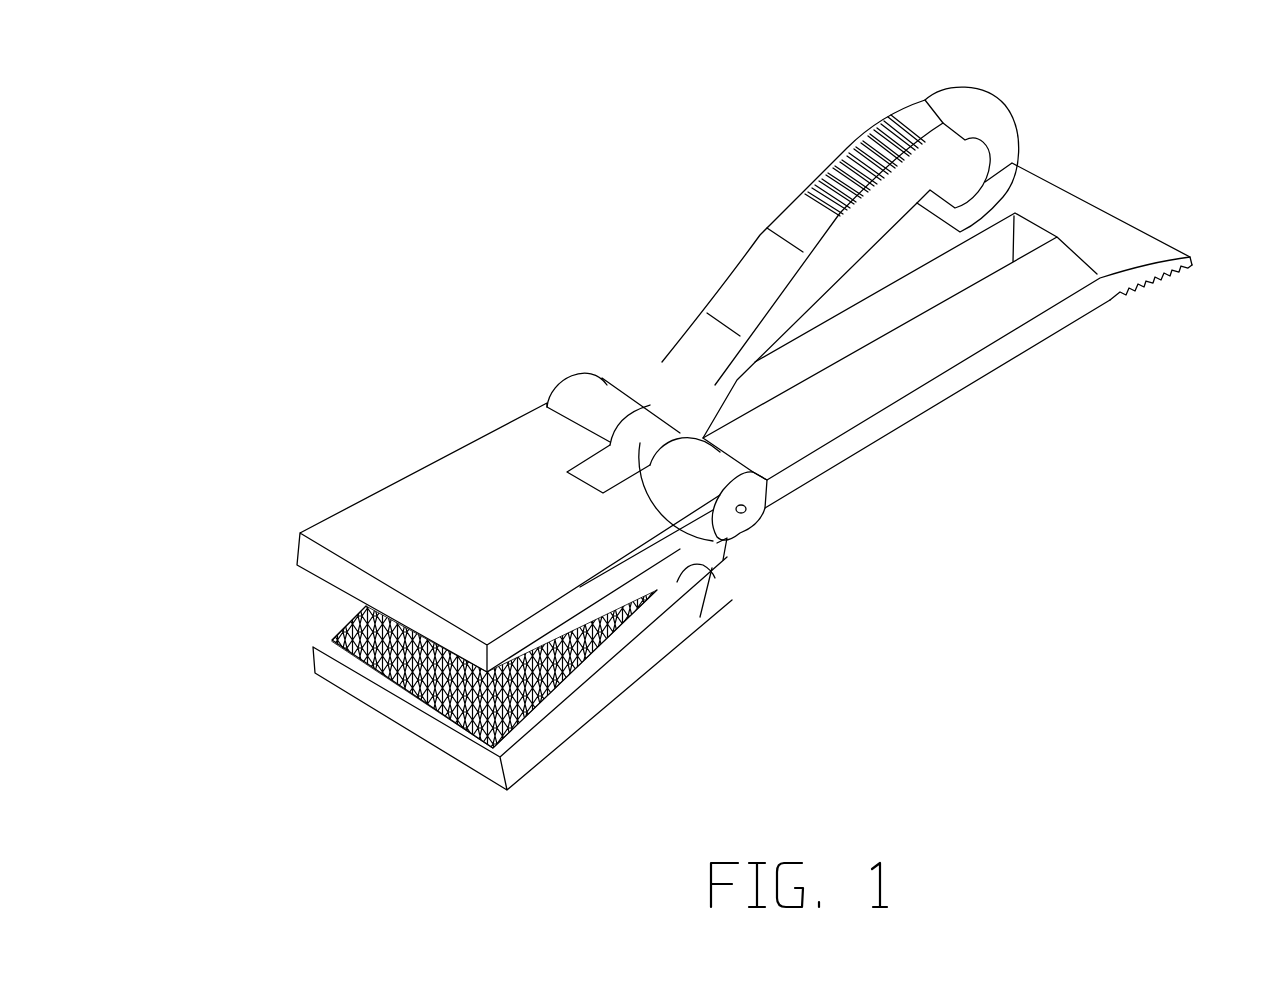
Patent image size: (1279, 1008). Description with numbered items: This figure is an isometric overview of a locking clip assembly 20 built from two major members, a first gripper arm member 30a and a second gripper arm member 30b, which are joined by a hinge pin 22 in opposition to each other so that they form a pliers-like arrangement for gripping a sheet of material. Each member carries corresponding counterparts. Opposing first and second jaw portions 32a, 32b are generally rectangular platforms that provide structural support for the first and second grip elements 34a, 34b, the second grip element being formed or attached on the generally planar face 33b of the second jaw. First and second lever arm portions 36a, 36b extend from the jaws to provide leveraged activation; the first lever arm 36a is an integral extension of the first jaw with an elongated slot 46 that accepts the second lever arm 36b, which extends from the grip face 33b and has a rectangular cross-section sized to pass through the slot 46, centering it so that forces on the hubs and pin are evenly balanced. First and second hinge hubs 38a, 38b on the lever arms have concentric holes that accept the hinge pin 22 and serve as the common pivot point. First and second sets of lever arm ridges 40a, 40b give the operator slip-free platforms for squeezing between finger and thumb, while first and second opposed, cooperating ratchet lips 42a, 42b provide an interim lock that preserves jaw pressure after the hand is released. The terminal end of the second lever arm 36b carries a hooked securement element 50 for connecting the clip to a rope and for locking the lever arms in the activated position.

The clip assembly 20 is at (378, 325).
The hinge pin 22 is at (747, 514).
The first gripper arm member 30a is at (848, 495).
The second gripper arm member 30b is at (722, 227).
The first jaw portion 32a is at (397, 515).
The second jaw portion 32b is at (628, 663).
The planar face 33b is at (720, 575).
The first grip element 34a is at (330, 590).
The second grip element 34b is at (543, 712).
The first lever arm portion 36a is at (890, 373).
The second lever arm portion 36b is at (737, 281).
The first hinge hub 38a is at (690, 365).
The second hinge hub 38b is at (722, 548).
The first set of lever arm ridges 40a is at (1135, 278).
The second set of lever arm ridges 40b is at (847, 150).
The first ratchet lip 42a is at (1016, 250).
The second ratchet lip 42b is at (1013, 128).
The elongated slot 46 is at (977, 200).
The hooked securement element 50 is at (877, 327).